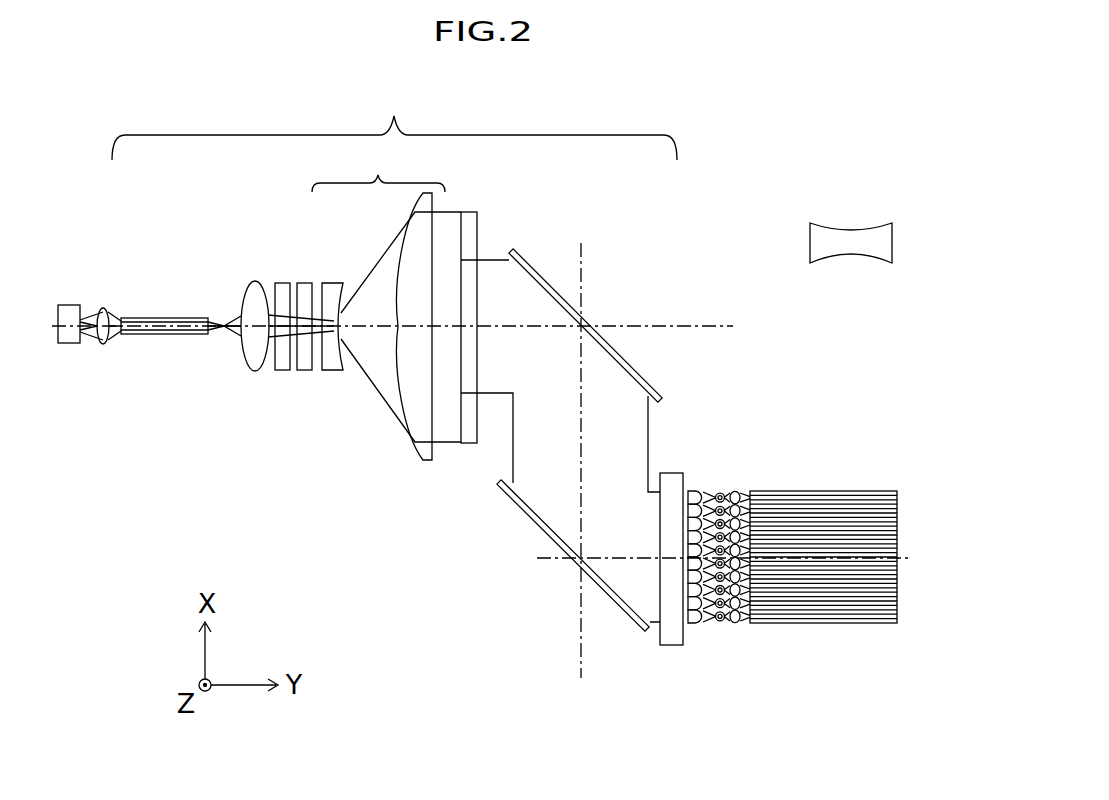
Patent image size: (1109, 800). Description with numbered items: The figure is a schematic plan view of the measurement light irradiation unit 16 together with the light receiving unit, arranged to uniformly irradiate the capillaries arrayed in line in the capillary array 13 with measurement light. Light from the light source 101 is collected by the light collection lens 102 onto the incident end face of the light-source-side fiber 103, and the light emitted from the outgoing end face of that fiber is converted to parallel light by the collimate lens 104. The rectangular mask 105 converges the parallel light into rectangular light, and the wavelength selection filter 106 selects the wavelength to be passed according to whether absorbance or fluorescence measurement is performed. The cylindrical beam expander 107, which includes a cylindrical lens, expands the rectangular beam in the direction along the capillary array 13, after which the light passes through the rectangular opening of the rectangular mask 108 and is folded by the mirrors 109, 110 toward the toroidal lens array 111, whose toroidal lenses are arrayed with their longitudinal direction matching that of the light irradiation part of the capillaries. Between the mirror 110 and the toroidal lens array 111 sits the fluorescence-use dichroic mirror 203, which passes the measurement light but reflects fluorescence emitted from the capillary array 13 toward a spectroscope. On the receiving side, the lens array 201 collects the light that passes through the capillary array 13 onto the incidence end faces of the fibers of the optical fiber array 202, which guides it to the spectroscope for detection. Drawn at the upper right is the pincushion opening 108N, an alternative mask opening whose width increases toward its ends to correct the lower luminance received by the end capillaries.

The measurement light irradiation unit 16 is at (394, 120).
The light source 101 is at (70, 303).
The light collection lens 102 is at (108, 344).
The light-source-side fiber 103 is at (168, 317).
The collimate lens 104 is at (248, 370).
The rectangular mask 105 is at (288, 283).
The wavelength selection filter 106 is at (310, 372).
The cylindrical beam expander 107 is at (378, 302).
The rectangular mask 108 is at (468, 212).
The pincushion opening 108N is at (798, 226).
The mirror 109 is at (637, 365).
The mirror 110 is at (517, 505).
The toroidal lens array 111 is at (697, 490).
The capillary array 13 is at (720, 622).
The lens array 201 is at (736, 625).
The optical fiber array 202 is at (833, 490).
The fluorescence-use dichroic mirror 203 is at (670, 645).